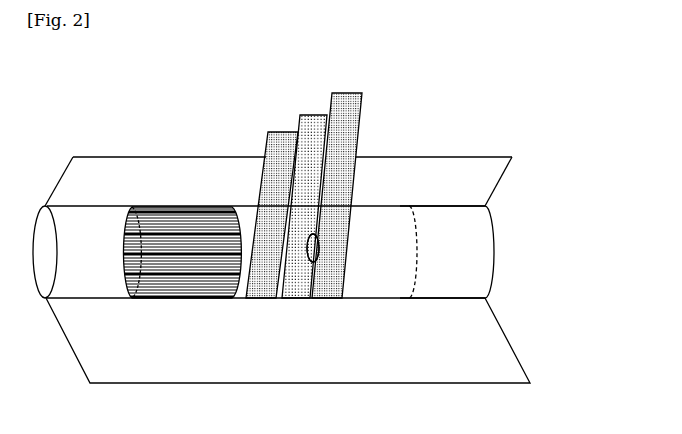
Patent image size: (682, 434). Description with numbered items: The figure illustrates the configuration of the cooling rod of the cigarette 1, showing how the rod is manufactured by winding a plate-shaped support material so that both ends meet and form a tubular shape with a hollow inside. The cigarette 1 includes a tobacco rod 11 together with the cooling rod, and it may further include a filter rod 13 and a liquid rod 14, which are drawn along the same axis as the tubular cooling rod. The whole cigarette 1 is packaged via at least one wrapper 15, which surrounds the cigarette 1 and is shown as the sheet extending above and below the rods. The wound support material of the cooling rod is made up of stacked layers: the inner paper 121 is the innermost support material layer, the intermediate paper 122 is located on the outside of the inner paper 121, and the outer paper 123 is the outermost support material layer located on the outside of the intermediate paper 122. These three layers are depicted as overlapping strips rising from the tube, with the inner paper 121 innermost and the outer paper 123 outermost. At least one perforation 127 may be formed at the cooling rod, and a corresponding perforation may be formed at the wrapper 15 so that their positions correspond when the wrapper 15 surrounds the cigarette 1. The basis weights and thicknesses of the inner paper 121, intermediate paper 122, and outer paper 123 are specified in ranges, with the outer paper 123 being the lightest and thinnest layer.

The cigarette 1 is at (515, 92).
The tobacco rod 11 is at (163, 212).
The filter rod 13 is at (450, 217).
The liquid rod 14 is at (77, 215).
The wrapper 15 is at (75, 362).
The inner paper 121 is at (347, 93).
The intermediate paper 122 is at (317, 115).
The outer paper 123 is at (283, 132).
The perforation 127 is at (320, 258).